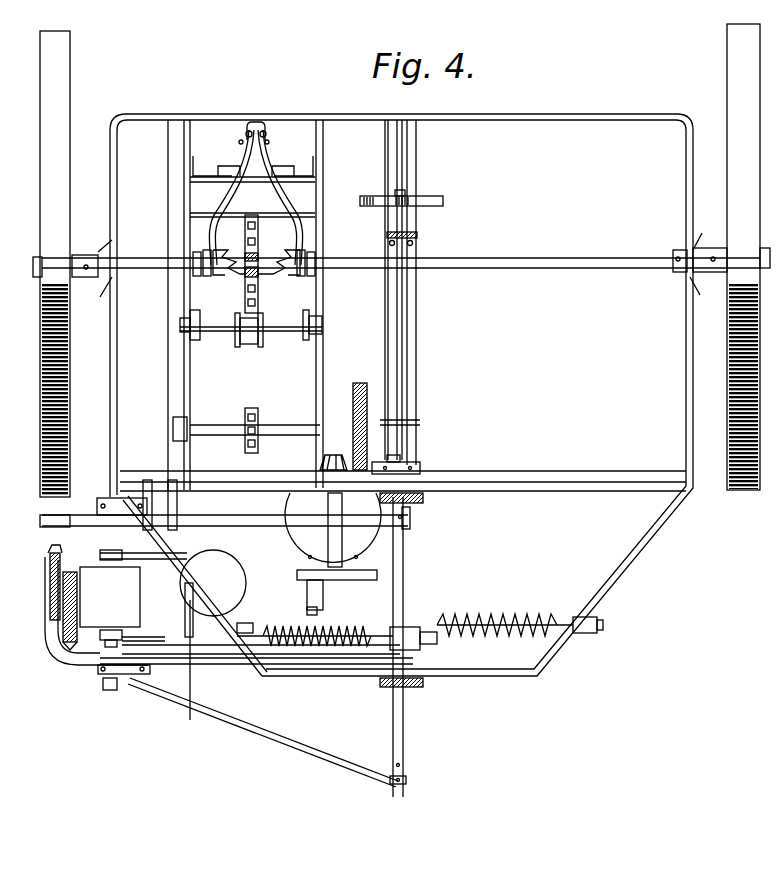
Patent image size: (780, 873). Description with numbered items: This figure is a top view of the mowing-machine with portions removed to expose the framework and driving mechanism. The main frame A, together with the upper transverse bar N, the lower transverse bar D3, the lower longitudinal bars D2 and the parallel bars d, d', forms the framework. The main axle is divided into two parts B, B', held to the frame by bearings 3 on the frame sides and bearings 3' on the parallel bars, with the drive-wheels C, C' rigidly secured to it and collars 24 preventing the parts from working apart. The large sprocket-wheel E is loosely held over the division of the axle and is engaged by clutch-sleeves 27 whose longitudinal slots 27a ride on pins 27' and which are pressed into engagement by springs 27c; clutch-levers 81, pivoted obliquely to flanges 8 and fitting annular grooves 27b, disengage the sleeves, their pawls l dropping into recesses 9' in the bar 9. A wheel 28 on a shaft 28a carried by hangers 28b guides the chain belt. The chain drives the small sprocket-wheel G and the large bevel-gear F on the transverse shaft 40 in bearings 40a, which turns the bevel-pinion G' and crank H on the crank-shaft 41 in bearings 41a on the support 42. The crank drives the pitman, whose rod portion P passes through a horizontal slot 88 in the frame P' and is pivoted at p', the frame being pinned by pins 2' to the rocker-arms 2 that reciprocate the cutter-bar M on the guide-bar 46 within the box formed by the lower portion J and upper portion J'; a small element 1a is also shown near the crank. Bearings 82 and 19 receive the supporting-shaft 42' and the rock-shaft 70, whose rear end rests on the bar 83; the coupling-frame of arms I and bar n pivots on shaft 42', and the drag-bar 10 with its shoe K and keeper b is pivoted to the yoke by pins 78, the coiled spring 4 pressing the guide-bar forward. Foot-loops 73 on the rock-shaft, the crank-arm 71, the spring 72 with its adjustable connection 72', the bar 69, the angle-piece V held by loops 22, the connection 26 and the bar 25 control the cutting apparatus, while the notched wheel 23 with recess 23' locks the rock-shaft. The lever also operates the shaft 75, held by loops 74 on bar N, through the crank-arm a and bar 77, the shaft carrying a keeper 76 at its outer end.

The main frame A is at (530, 114).
The main axle B is at (142, 248).
The main axle section B' is at (401, 253).
The drive-wheel C is at (61, 264).
The drive-wheel C' is at (732, 257).
The lower longitudinal bar D2 is at (410, 158).
The lower transverse bar D3 is at (572, 472).
The large sprocket-wheel E is at (258, 250).
The large bevel-gear F is at (363, 385).
The small sprocket-wheel G is at (239, 426).
The small bevel-pinion G' is at (316, 457).
The crank H is at (340, 582).
The arm of coupling-frame I is at (105, 690).
The lower portion of box J is at (35, 629).
The upper portion of box J' is at (110, 597).
The shoe K is at (97, 670).
The cutter-bar M is at (55, 645).
The upper transverse bar N is at (576, 488).
The pitman head and rod portion P is at (212, 651).
The pitman frame P' is at (216, 575).
The pivotal connection p' is at (118, 613).
The angle-piece V is at (217, 593).
The crank-arm a is at (206, 550).
The keeper b is at (70, 640).
The parallel bar d is at (164, 405).
The parallel bar d' is at (300, 385).
The pawl l is at (239, 142).
The bar of coupling-frame n is at (263, 732).
The stud 1a is at (318, 611).
The rocker-arm 2 is at (206, 616).
The pin 2' is at (74, 623).
The bearing 3 is at (391, 276).
The bearing 3' is at (248, 232).
The coiled spring 4 is at (50, 567).
The flange 8 is at (198, 218).
The bar 9 is at (268, 195).
The recess 9' is at (253, 163).
The drag-bar 10 is at (64, 600).
The bearing 19 is at (424, 684).
The loop 22 is at (200, 560).
The wheel 23 is at (424, 464).
The notch or recess 23' is at (427, 449).
The collar 24 is at (113, 300).
The bar 25 is at (198, 590).
The connection 26 is at (342, 645).
The clutch-sleeve 27 is at (247, 288).
The pin 27' is at (227, 241).
The longitudinal slot 27a is at (276, 277).
The annular groove 27b is at (310, 270).
The spring 27c is at (318, 263).
The wheel 28 is at (251, 347).
The shaft 28a is at (290, 334).
The hanger 28b is at (324, 327).
The transverse shaft 40 is at (173, 428).
The bearing 40a is at (402, 422).
The crank-shaft 41 is at (380, 557).
The bearing 41a is at (380, 568).
The forward-extending support 42 is at (333, 530).
The supporting-shaft 42' is at (415, 647).
The guide-bar 46 is at (52, 588).
The bar 69 is at (310, 650).
The rock-shaft 70 is at (398, 328).
The crank-arm 71 is at (436, 645).
The closed coiled spring 72 is at (505, 640).
The adjustable connection 72' is at (604, 629).
The loop 73 is at (443, 201).
The loop 74 is at (148, 500).
The shaft 75 is at (260, 528).
The keeper 76 is at (53, 523).
The bar 77 is at (167, 458).
The pin 78 is at (105, 550).
The clutch-lever 81 is at (248, 126).
The bearing 82 is at (418, 505).
The bar 83 is at (418, 235).
The horizontal slot 88 is at (245, 572).